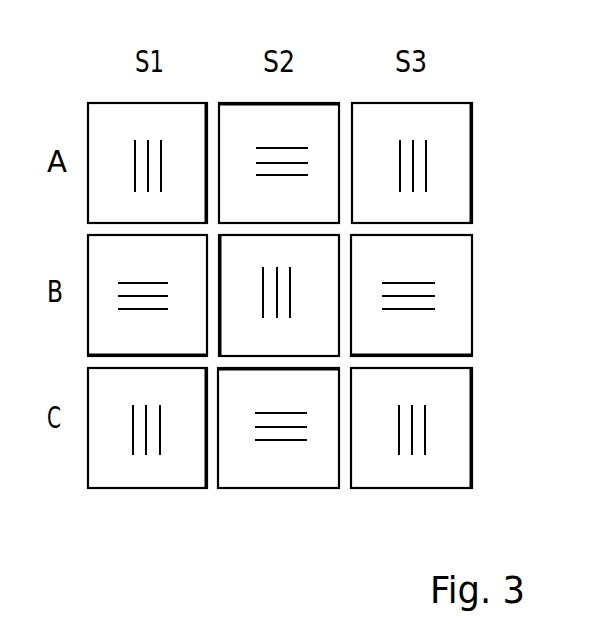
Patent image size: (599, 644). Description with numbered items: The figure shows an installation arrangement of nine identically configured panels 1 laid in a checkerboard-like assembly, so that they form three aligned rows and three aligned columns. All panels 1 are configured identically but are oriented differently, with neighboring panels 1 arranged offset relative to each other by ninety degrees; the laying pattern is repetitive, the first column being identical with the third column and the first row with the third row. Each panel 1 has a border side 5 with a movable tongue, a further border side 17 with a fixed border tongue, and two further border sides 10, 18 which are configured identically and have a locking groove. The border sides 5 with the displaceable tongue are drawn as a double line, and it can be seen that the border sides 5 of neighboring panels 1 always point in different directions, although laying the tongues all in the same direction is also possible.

The panel 1 is at (103, 134).
The border side 5 is at (472, 148).
The border side 10 is at (341, 181).
The further border side 17 is at (403, 225).
The border side 18 is at (423, 103).